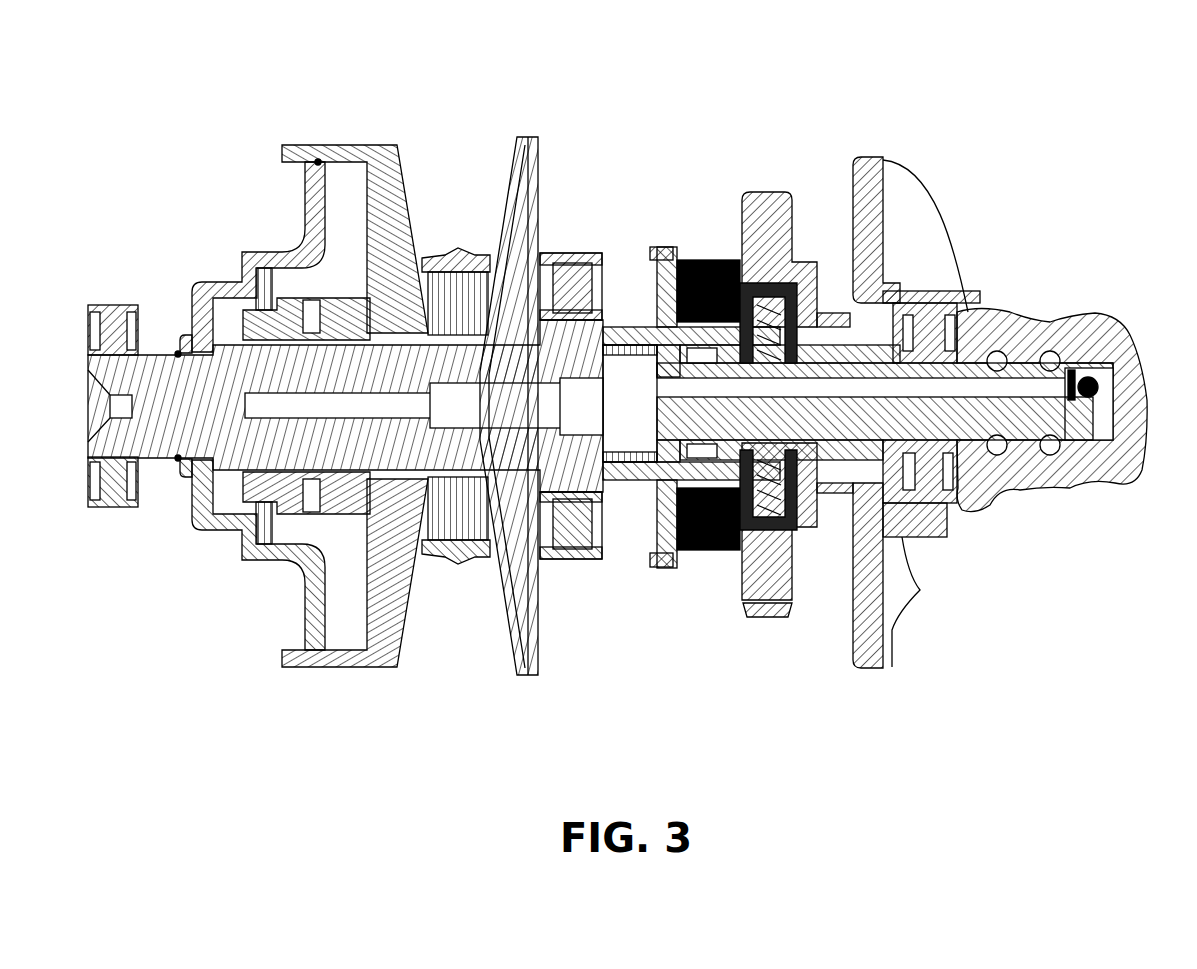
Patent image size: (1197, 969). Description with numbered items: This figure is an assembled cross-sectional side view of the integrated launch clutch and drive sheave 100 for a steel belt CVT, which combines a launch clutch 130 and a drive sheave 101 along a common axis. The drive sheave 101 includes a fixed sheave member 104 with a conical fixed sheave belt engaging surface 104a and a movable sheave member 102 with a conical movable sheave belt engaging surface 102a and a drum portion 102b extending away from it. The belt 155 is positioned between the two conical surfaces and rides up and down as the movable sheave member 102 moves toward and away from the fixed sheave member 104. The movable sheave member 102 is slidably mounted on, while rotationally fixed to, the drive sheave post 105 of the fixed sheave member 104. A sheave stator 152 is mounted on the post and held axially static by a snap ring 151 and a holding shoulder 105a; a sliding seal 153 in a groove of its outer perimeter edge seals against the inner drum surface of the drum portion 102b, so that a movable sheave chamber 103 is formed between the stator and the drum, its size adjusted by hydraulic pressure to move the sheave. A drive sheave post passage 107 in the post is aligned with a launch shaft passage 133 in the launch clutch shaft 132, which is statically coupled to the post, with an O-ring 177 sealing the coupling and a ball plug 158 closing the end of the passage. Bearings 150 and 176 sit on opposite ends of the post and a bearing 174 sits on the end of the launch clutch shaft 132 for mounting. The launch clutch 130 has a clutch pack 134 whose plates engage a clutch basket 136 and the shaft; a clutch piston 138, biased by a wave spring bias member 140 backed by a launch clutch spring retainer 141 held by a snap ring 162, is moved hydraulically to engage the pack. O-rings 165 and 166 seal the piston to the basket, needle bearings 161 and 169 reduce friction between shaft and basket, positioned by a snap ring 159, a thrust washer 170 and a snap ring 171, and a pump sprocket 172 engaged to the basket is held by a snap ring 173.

The integrated launch clutch and drive sheave 100 is at (162, 100).
The drive sheave 101 is at (575, 742).
The movable sheave member 102 is at (398, 170).
The conical movable sheave belt engaging surface 102a is at (410, 593).
The drum portion 102b is at (343, 660).
The movable sheave chamber 103 is at (340, 172).
The fixed sheave member 104 is at (530, 152).
The conical fixed sheave belt engaging surface 104a is at (505, 195).
The drive sheave post 105 is at (480, 540).
The holding shoulder 105a is at (207, 480).
The drive sheave post passage 107 is at (383, 412).
The launch clutch 130 is at (855, 645).
The launch clutch shaft 132 is at (652, 330).
The launch shaft passage 133 is at (1013, 390).
The clutch pack 134 is at (740, 243).
The clutch basket 136 is at (775, 200).
The clutch piston 138 is at (797, 527).
The bias member 140 is at (752, 560).
The launch clutch spring retainer 141 is at (703, 545).
The bearing 150 is at (115, 305).
The snap ring 151 is at (178, 352).
The sheave stator 152 is at (308, 232).
The sliding seal 153 is at (318, 160).
The belt 155 is at (476, 265).
The ball plug 158 is at (1090, 380).
The snap ring 159 is at (750, 372).
The needle bearing 161 is at (665, 535).
The snap ring 162 is at (618, 394).
The O-ring 165 is at (778, 285).
The O-ring 166 is at (805, 490).
The needle bearing 169 is at (880, 484).
The thrust washer 170 is at (895, 325).
The snap ring 171 is at (920, 365).
The pump sprocket 172 is at (835, 312).
The snap ring 173 is at (855, 485).
The bearing 174 is at (928, 322).
The bearing 176 is at (565, 255).
The O-ring 177 is at (608, 472).